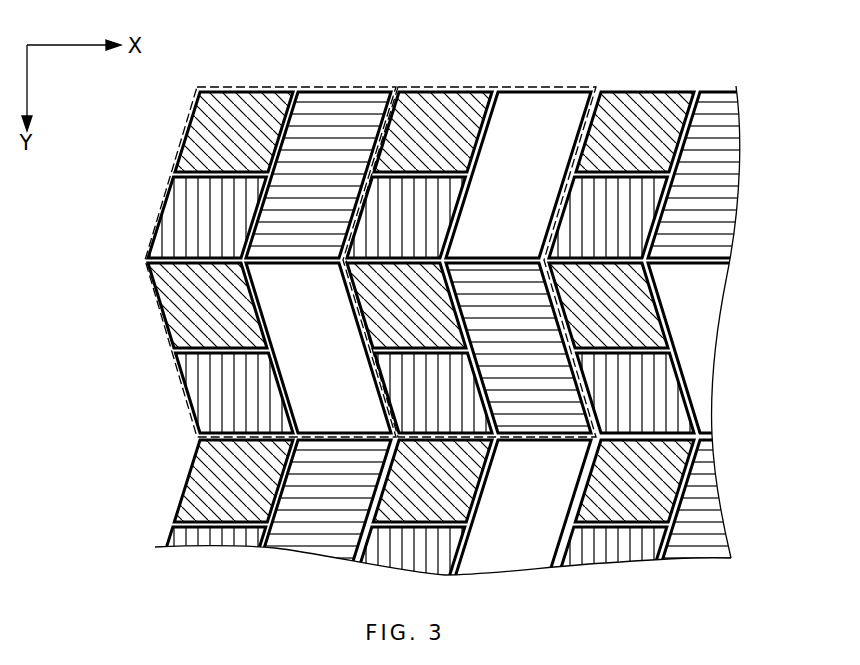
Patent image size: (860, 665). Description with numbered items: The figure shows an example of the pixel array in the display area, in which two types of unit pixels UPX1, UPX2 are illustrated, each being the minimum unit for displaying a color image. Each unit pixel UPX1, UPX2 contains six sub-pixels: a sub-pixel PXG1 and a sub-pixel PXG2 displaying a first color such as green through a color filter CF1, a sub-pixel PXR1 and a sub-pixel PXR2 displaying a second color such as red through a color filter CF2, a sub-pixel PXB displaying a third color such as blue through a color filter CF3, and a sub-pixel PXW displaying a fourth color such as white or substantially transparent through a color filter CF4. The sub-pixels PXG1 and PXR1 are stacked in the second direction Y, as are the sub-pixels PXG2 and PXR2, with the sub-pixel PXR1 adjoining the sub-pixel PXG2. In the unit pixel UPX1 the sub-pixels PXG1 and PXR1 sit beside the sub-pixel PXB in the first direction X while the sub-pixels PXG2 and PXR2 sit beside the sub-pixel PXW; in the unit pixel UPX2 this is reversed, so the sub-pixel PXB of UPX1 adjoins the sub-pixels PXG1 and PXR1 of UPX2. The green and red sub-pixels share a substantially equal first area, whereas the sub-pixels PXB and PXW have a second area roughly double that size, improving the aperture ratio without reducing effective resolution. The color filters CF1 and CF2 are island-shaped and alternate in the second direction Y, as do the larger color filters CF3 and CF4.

The color filter of the first color CF1 is at (385, 307).
The color filter of the second color CF2 is at (385, 388).
The color filter of the third color CF3 is at (519, 320).
The color filter of the fourth color CF4 is at (444, 346).
The unit pixel UPX1 is at (284, 87).
The unit pixel UPX2 is at (513, 87).
The sub-pixel PXG1 is at (434, 307).
The sub-pixel PXG2 is at (408, 305).
The sub-pixel PXR1 is at (407, 388).
The sub-pixel PXR2 is at (435, 393).
The sub-pixel PXB is at (519, 346).
The sub-pixel PXW is at (519, 346).